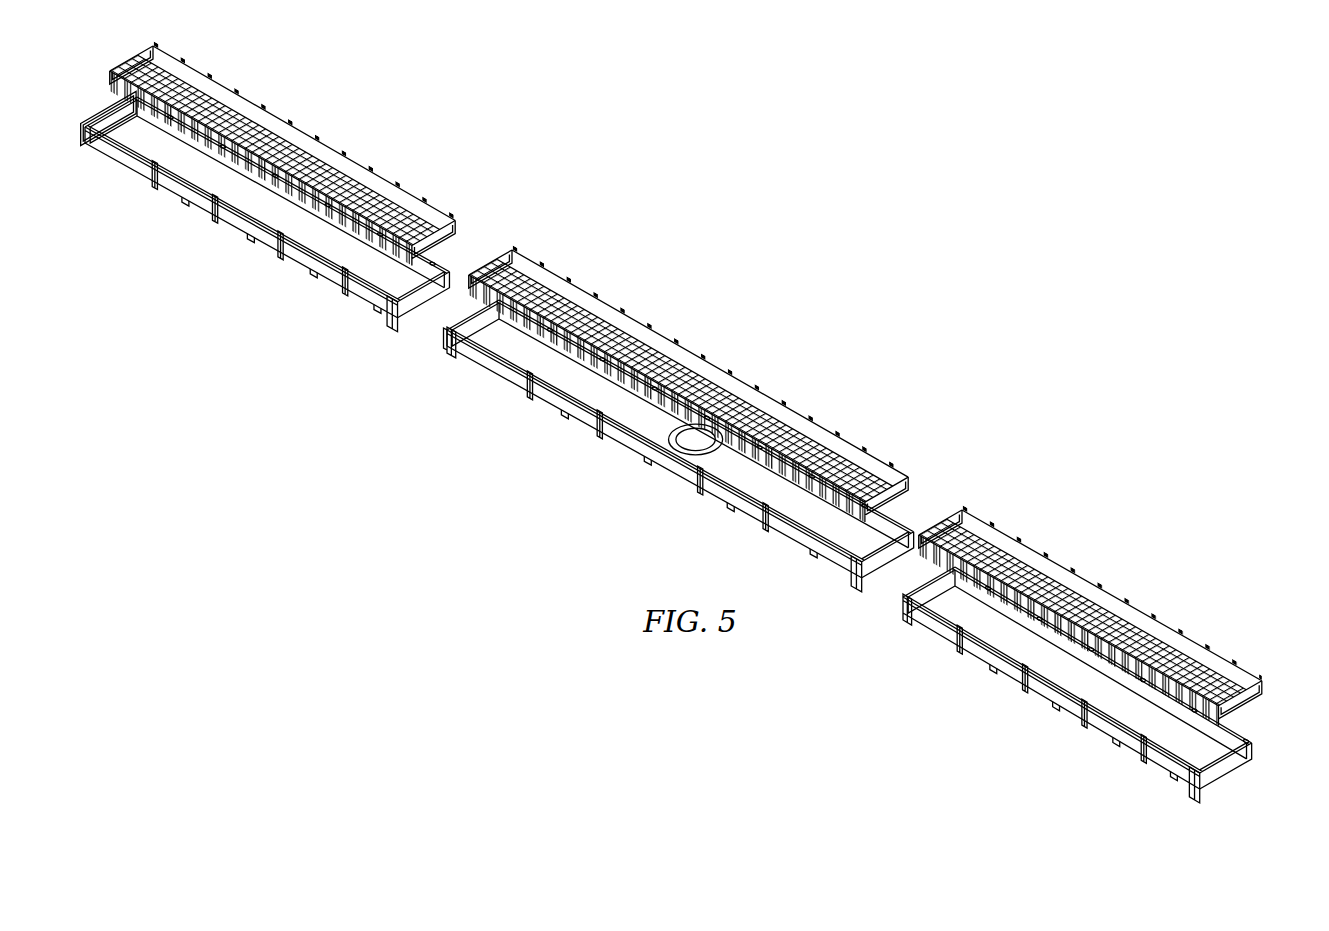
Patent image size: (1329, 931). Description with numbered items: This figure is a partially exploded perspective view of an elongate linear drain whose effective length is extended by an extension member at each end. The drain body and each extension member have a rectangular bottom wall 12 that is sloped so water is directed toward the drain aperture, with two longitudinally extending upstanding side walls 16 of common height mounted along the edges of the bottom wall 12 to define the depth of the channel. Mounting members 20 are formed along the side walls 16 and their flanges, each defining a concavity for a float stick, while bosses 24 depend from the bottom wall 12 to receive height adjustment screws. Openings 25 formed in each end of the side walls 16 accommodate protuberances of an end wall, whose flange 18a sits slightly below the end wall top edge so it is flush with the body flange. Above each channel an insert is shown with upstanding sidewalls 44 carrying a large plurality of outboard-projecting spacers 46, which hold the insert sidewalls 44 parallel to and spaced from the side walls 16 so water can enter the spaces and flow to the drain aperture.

The rectangular bottom wall 12 is at (223, 182).
The upstanding side walls 16 is at (250, 235).
The flange of end wall 18a is at (112, 122).
The mounting members 20 is at (150, 180).
The boss 24 is at (315, 287).
The openings 25 is at (455, 328).
The upstanding sidewalls of insert 44 is at (300, 138).
The spacers 46 is at (133, 50).